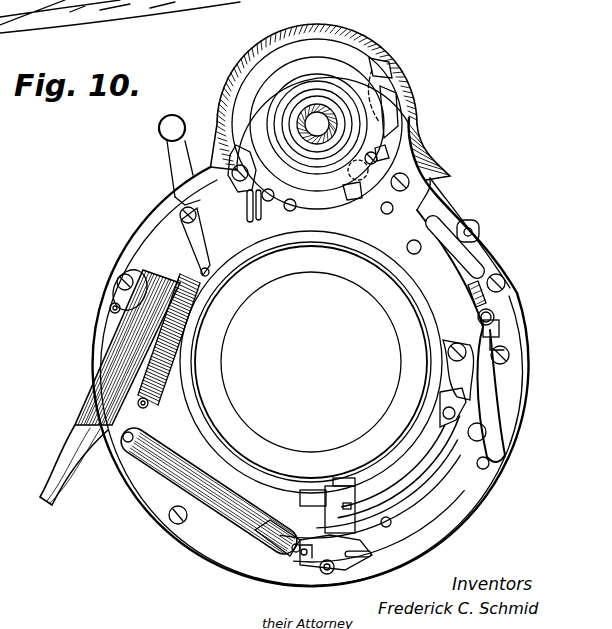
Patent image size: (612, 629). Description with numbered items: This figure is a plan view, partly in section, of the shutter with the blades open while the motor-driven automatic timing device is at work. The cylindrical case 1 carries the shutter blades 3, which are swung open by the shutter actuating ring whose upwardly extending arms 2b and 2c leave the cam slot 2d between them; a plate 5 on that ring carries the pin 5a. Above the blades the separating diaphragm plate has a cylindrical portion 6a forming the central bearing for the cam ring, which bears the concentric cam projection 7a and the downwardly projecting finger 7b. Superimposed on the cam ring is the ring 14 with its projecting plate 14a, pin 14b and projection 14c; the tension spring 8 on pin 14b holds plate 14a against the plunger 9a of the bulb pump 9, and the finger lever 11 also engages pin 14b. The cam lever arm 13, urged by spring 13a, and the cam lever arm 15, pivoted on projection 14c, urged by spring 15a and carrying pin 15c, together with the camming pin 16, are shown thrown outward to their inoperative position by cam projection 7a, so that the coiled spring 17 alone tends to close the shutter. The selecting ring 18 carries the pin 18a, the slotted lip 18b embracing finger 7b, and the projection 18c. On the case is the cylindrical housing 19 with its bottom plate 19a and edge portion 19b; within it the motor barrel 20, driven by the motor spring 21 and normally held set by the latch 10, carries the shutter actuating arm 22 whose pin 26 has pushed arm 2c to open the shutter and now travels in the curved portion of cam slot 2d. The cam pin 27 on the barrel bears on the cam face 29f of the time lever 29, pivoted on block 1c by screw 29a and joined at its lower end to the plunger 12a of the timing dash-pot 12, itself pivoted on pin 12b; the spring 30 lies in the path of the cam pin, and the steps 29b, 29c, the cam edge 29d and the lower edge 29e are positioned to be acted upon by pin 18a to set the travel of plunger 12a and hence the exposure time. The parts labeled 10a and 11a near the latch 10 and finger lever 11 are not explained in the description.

The cylindrical case 1 is at (100, 300).
The block 1c is at (450, 212).
The arm 2b is at (360, 76).
The arm 2c is at (392, 116).
The cam slot 2d is at (386, 100).
The shutter blades 3 is at (302, 232).
The plate 5 is at (353, 515).
The pin 5a is at (349, 509).
The cylindrical portion 6a is at (213, 303).
The cam projection 7a is at (413, 487).
The finger 7b is at (290, 552).
The tension spring 8 is at (177, 337).
The bulb pump 9 is at (83, 408).
The plunger 9a is at (143, 272).
The latch 10 is at (236, 147).
The lever rod 10a is at (247, 218).
The finger lever 11 is at (173, 155).
The knob stem 11a is at (172, 200).
The timing dash-pot 12 is at (210, 517).
The plunger 12a is at (262, 545).
The pin 12b is at (127, 443).
The cam lever arm 13 is at (441, 465).
The spring 13a is at (513, 370).
The ring 14 is at (185, 425).
The projecting plate 14a is at (182, 248).
The pin 14b is at (201, 272).
The projection 14c is at (466, 392).
The cam lever arm 15 is at (449, 452).
The spring 15a is at (457, 377).
The pin 15c is at (390, 526).
The camming pin 16 is at (303, 556).
The coiled spring 17 is at (488, 298).
The selecting ring 18 is at (393, 265).
The pin 18a is at (494, 317).
The lip 18b is at (287, 480).
The projection 18c is at (347, 478).
The cylindrical housing 19 is at (247, 58).
The plate 19a is at (253, 77).
The edge portion 19b is at (394, 53).
The motor barrel 20 is at (306, 72).
The motor spring 21 is at (331, 92).
The shutter actuating arm 22 is at (352, 198).
The pin 26 is at (368, 166).
The cam pin 27 is at (376, 154).
The time lever 29 is at (492, 388).
The screw 29a is at (409, 182).
The step 29b is at (500, 325).
The step 29c is at (496, 342).
The cam edge 29d is at (499, 425).
The edge 29e is at (480, 268).
The cam face 29f is at (389, 150).
The spring 30 is at (333, 233).